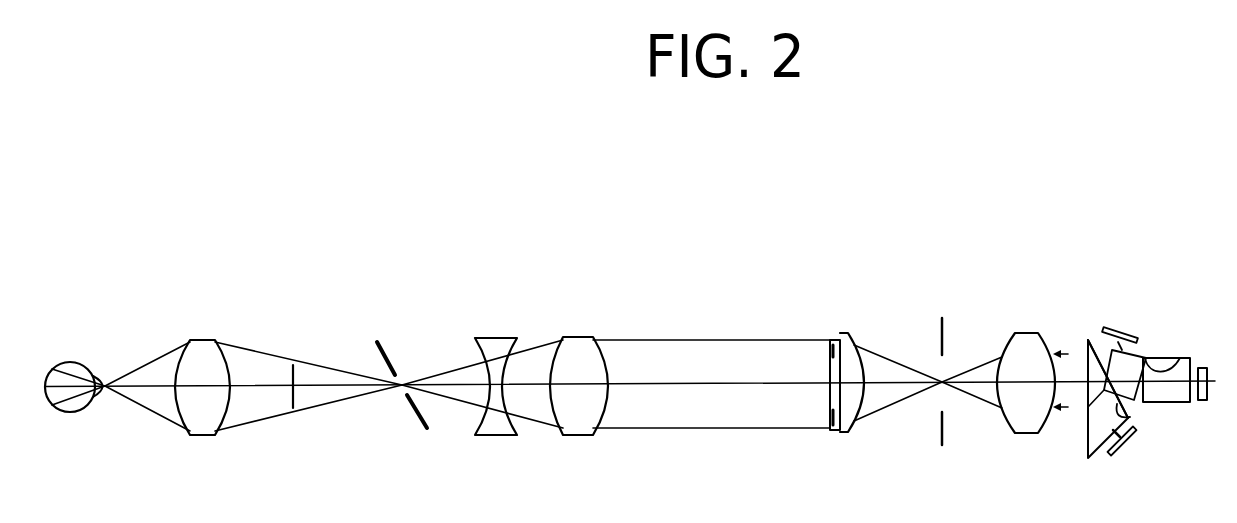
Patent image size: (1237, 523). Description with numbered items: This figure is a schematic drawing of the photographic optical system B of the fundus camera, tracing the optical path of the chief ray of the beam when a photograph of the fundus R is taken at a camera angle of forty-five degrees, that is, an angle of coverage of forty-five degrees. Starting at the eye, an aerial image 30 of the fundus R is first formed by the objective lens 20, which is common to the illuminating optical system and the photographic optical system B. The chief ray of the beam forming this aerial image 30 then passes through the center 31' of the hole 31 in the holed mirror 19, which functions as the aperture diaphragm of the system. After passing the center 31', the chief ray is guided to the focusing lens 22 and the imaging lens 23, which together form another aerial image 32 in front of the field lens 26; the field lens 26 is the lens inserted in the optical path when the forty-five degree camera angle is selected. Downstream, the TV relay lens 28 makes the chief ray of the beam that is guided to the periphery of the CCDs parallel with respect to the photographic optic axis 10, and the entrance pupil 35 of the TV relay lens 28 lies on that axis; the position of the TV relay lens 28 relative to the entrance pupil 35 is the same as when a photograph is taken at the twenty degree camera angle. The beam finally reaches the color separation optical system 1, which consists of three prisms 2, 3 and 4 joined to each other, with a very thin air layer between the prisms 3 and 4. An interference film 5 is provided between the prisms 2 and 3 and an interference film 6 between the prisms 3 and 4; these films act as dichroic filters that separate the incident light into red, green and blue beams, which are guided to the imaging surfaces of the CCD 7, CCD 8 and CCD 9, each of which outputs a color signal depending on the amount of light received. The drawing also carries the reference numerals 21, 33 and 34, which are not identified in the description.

The fundus R is at (44, 392).
The cornea 21 is at (74, 362).
The objective lens 20 is at (203, 340).
The aerial image 30 is at (292, 398).
The holed mirror 19 is at (391, 352).
The hole 31 is at (378, 425).
The center of hole 31' is at (433, 345).
The focusing lens 22 is at (493, 437).
The imaging lens 23 is at (577, 437).
The photographic optic axis 10 is at (693, 386).
The photographic optical system B is at (689, 302).
The aerial image 32 is at (828, 398).
The field lens 26 is at (856, 365).
The entrance pupil 35 is at (943, 323).
The relay lens for TV 28 is at (1023, 333).
The polarization direction marks 33 is at (1058, 352).
The beam splitting prism 34 is at (1087, 383).
The interference film 5 is at (1134, 416).
The prism 3 is at (1099, 338).
The CCD 7 is at (1117, 330).
The CCD 9 is at (1124, 457).
The prism 4 is at (1093, 438).
The prism 2 is at (1177, 400).
The interference film 6 is at (1170, 366).
The color separation optical system 1 is at (1157, 337).
The CCD 8 is at (1206, 401).